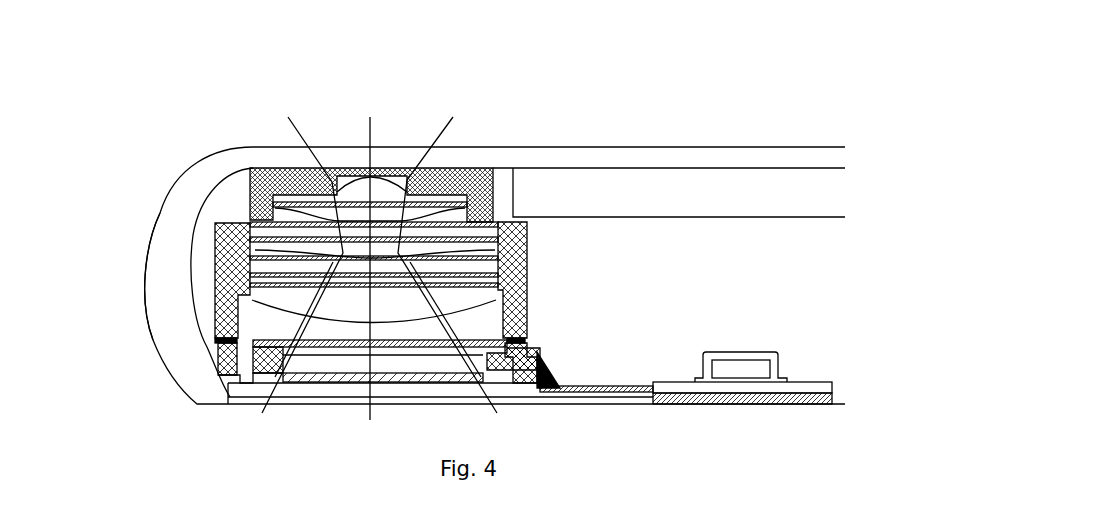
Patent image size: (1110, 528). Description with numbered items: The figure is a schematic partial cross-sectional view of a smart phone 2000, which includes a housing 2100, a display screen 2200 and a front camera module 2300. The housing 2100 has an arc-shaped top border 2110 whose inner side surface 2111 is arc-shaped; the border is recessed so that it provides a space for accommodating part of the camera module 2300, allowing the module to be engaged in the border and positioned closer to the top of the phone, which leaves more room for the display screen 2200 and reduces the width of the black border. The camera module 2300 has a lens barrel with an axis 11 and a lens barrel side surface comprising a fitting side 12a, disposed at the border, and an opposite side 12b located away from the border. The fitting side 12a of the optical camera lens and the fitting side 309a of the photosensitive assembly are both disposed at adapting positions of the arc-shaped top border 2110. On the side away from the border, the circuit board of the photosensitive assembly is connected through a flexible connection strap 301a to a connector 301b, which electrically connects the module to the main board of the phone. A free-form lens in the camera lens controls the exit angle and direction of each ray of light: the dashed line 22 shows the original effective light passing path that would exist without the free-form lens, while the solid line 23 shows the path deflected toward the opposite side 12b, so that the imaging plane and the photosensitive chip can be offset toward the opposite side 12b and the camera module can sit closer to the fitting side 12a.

The smart phone 2000 is at (505, 121).
The housing 2100 is at (197, 170).
The arc-shaped top border 2110 is at (163, 267).
The inner side surface of the arc-shaped border 2111 is at (192, 322).
The display screen 2200 is at (627, 187).
The front camera module 2300 is at (493, 207).
The axis 11 is at (370, 117).
The fitting side 12a is at (215, 250).
The opposite side 12b is at (528, 297).
The dashed line 22 is at (262, 413).
The solid line 23 is at (497, 413).
The flexible connection strap 301a is at (580, 387).
The connector 301b is at (740, 350).
The fitting side of the photosensitive assembly 309a is at (215, 357).